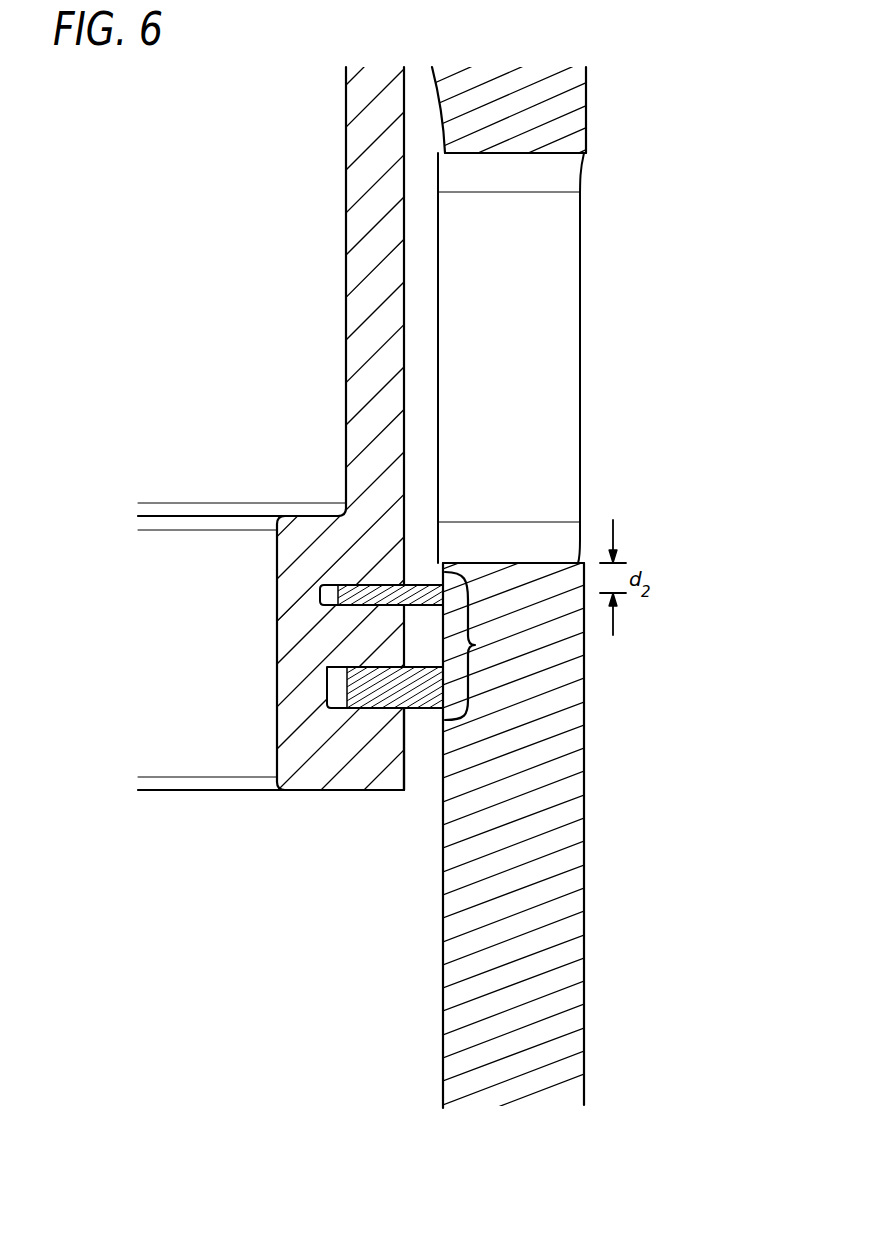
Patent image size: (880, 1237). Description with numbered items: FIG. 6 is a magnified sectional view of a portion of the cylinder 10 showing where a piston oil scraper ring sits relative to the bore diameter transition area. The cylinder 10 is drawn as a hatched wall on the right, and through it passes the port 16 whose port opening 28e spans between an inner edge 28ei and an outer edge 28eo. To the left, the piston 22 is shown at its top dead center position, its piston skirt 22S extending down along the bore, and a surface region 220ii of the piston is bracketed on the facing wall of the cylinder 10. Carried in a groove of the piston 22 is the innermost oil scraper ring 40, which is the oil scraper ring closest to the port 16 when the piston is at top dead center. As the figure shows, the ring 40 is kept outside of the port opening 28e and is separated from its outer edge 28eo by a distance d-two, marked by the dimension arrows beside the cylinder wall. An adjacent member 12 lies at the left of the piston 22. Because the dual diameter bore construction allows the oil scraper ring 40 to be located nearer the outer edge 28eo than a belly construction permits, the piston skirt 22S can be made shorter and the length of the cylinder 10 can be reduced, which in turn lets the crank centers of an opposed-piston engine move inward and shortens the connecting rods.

The cylinder 10 is at (584, 818).
The second member 12 is at (243, 886).
The port 16 is at (592, 318).
The piston 22 is at (346, 186).
The piston skirt 22S is at (403, 738).
The port opening 28e is at (528, 398).
The inner end of groove 28ei is at (528, 153).
The outer edge of port opening 28eo is at (525, 563).
The innermost oil scraper ring 40 is at (423, 584).
The inner surface portion 220ii is at (470, 645).